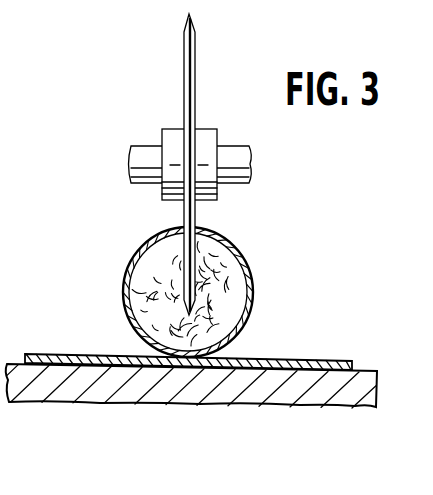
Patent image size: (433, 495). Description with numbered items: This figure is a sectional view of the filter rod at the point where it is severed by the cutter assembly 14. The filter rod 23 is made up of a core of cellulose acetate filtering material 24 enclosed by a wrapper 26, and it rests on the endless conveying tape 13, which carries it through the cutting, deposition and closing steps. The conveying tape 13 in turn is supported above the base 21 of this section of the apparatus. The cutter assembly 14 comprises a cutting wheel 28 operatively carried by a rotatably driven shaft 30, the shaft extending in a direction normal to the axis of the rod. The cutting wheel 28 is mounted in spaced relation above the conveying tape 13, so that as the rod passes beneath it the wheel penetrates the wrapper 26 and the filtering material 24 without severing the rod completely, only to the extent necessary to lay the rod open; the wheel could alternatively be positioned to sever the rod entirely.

The endless conveying tape 13 is at (318, 360).
The cutter assembly 14 is at (163, 129).
The base 21 is at (106, 393).
The filter rod 23 is at (130, 306).
The cellulose acetate filtering material 24 is at (237, 292).
The wrapper 26 is at (129, 264).
The cutting wheel 28 is at (187, 83).
The rotatably driven shaft 30 is at (135, 160).